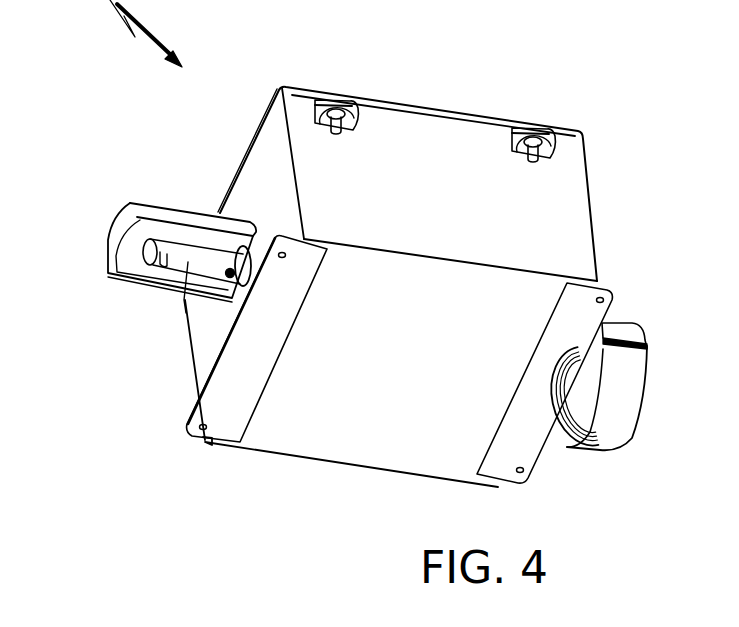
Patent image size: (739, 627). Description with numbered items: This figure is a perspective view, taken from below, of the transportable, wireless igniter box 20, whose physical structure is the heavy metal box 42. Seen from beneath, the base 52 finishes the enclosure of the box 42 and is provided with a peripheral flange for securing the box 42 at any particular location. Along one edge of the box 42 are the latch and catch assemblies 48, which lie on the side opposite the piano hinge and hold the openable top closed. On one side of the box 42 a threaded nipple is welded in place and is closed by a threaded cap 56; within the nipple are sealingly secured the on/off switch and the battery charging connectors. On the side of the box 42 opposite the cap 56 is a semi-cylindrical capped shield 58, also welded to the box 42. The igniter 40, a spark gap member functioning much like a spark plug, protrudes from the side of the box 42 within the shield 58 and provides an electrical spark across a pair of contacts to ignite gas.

The transportable, wireless igniter box 20 is at (135, 37).
The igniter 40 is at (187, 268).
The box 42 is at (597, 257).
The latch and catch assemblies 48 is at (350, 102).
The base 52 is at (387, 380).
The threaded cap 56 is at (620, 430).
The semi-cylindrical capped shield 58 is at (120, 213).